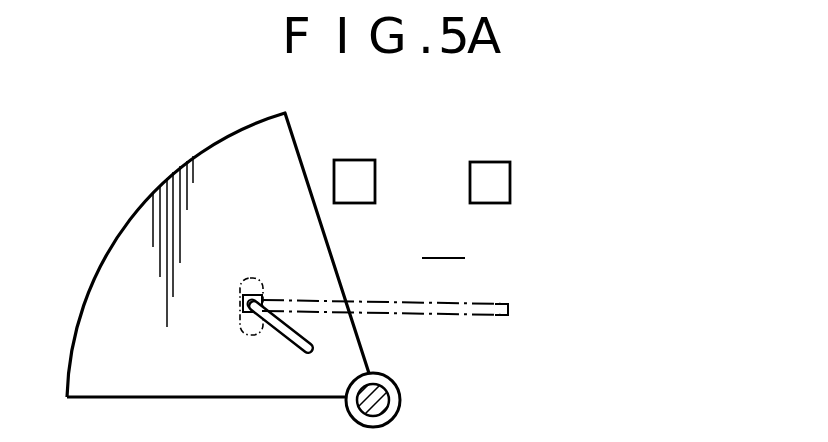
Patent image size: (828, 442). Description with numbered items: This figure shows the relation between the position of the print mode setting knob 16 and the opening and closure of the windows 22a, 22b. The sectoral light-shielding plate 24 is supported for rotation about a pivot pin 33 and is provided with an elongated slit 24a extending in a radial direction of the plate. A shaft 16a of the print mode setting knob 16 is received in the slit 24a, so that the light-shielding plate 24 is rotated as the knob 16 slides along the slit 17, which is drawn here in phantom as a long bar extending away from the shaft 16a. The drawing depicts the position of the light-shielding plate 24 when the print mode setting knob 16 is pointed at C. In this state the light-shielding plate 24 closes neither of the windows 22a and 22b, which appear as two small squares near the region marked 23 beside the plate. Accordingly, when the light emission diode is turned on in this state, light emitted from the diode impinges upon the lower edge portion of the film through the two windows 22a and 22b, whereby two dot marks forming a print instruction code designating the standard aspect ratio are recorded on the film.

The sectoral light-shielding plate 24 is at (113, 253).
The elongated slit 24a is at (294, 346).
The pivot pin 33 is at (384, 394).
The print mode setting knob 16 is at (240, 327).
The shaft of the print mode setting knob 16a is at (252, 279).
The slit 17 is at (457, 316).
The window 22a is at (376, 160).
The window 22b is at (500, 161).
The sensing region 23 is at (443, 244).